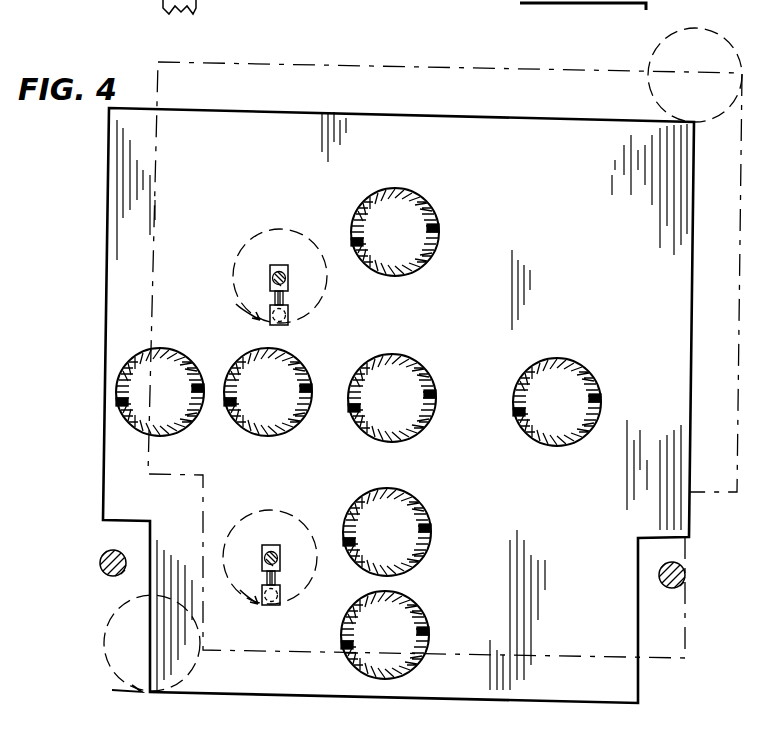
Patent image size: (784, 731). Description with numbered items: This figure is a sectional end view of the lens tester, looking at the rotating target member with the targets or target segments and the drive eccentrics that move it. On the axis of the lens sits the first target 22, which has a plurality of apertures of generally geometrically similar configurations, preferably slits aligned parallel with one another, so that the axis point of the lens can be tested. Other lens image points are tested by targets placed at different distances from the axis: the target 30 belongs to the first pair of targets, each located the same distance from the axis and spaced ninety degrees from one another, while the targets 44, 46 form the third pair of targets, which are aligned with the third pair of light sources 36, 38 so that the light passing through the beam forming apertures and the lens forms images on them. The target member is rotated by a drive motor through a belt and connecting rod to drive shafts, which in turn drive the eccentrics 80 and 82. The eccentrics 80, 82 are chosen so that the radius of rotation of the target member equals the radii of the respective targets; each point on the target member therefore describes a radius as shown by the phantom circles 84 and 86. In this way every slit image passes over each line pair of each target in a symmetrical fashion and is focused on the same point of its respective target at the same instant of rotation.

The first target 22 is at (430, 378).
The target of first pair 30 is at (433, 518).
The light source of third pair 36 is at (598, 385).
The light source of third pair 38 is at (440, 222).
The target of third pair 44 is at (166, 348).
The target of third pair 46 is at (428, 622).
The eccentric 80 is at (280, 578).
The eccentric 82 is at (288, 298).
The phantom circle 84 is at (728, 38).
The phantom circle 86 is at (119, 611).